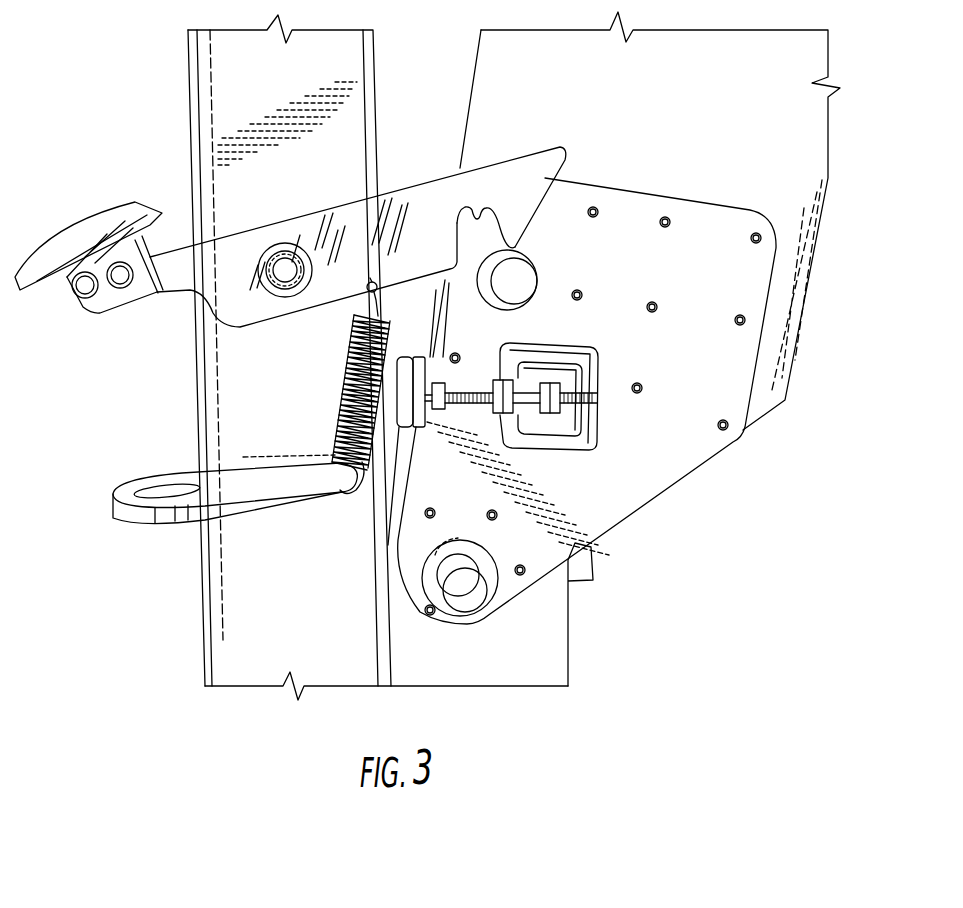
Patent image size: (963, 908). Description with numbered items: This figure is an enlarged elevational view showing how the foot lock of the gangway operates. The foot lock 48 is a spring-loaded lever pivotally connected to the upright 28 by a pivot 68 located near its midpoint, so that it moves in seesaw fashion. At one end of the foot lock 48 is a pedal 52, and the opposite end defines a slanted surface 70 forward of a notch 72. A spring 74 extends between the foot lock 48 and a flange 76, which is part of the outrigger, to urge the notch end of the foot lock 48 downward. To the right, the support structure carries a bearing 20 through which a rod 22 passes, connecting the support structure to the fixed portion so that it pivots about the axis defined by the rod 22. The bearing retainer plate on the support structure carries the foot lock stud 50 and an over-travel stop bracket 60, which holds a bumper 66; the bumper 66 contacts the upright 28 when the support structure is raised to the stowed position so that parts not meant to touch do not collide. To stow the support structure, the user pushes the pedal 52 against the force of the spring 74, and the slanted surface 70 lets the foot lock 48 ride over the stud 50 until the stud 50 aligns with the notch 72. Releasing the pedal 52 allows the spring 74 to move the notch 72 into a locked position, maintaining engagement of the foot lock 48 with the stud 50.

The upright 28 is at (193, 78).
The pedal 52 is at (143, 207).
The pivot 68 is at (287, 265).
The foot lock 48 is at (432, 200).
The notch 72 is at (483, 213).
The slanted surface 70 is at (543, 198).
The foot lock stud 50 is at (523, 277).
The over-travel stop bracket 60 is at (570, 352).
The spring 74 is at (340, 400).
The flange 76 is at (180, 473).
The bumper 66 is at (380, 500).
The bearing 20 is at (487, 563).
The rod 22 is at (467, 593).